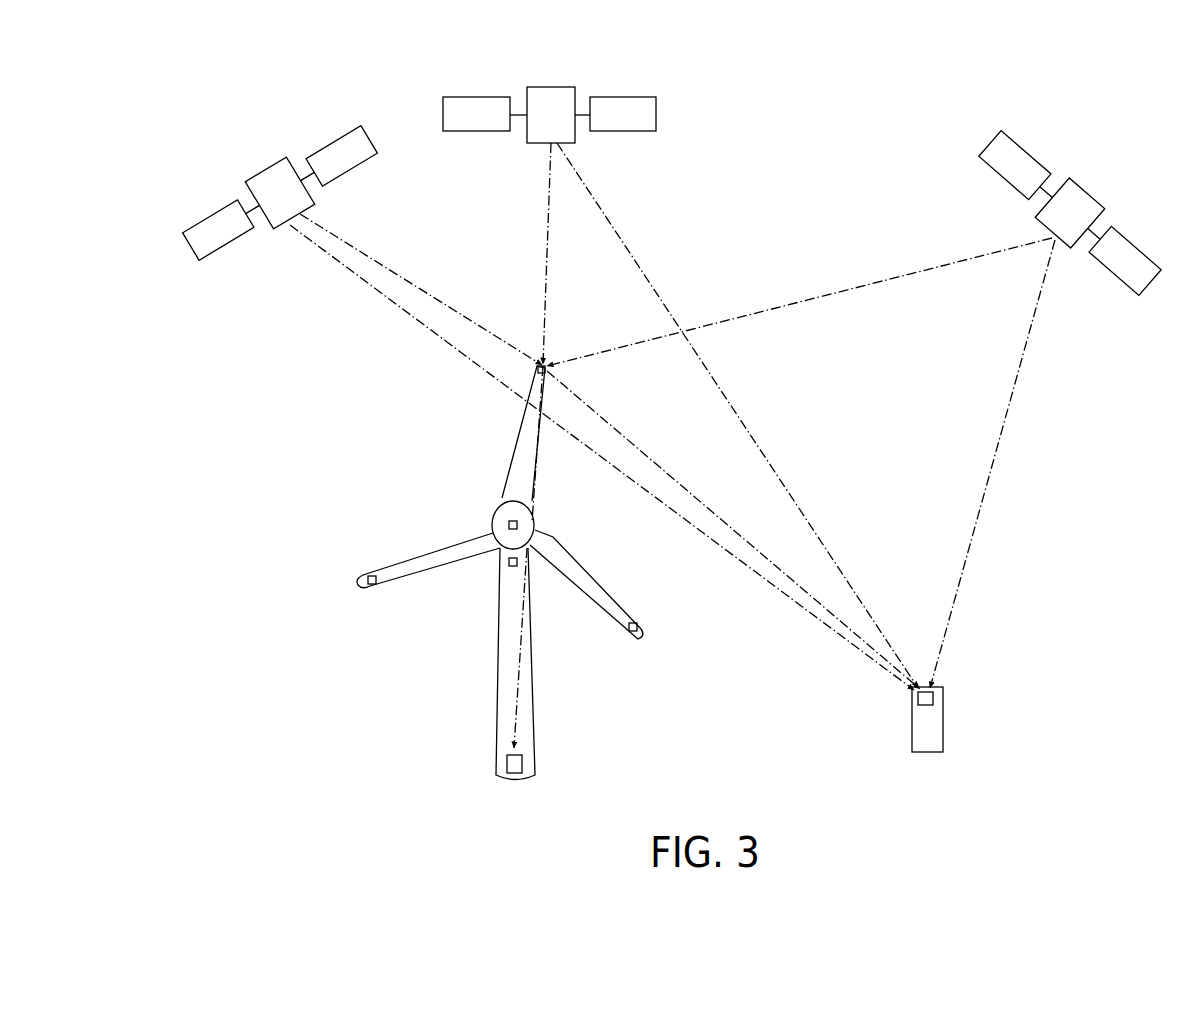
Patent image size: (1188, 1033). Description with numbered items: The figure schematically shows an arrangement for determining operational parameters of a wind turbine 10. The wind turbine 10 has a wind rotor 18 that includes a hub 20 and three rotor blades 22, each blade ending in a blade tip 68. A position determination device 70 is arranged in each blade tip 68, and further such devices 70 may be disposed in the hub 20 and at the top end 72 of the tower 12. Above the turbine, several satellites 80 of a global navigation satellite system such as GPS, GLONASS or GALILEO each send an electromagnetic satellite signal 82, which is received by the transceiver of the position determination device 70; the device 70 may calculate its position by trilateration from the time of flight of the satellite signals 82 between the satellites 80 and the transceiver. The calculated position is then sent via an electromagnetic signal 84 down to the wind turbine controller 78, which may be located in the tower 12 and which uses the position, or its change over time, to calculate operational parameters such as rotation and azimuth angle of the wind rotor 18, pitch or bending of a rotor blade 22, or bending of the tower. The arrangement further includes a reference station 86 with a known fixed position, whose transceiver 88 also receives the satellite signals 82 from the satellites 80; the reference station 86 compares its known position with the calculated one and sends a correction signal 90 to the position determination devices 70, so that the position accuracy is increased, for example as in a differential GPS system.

The wind turbine 10 is at (348, 465).
The tower 12 is at (508, 648).
The wind rotor 18 is at (493, 541).
The hub 20 is at (536, 524).
The rotor blades 22 is at (502, 487).
The blade tip 68 is at (518, 386).
The position determination device 70 is at (532, 373).
The top end of the tower 72 is at (544, 579).
The wind turbine controller 78 is at (505, 762).
The satellites 80 is at (268, 187).
The electromagnetic satellite signal 82 is at (432, 298).
The electromagnetic signal 84 is at (520, 688).
The reference station 86 is at (982, 728).
The transceiver 88 is at (934, 698).
The correction signal 90 is at (666, 476).